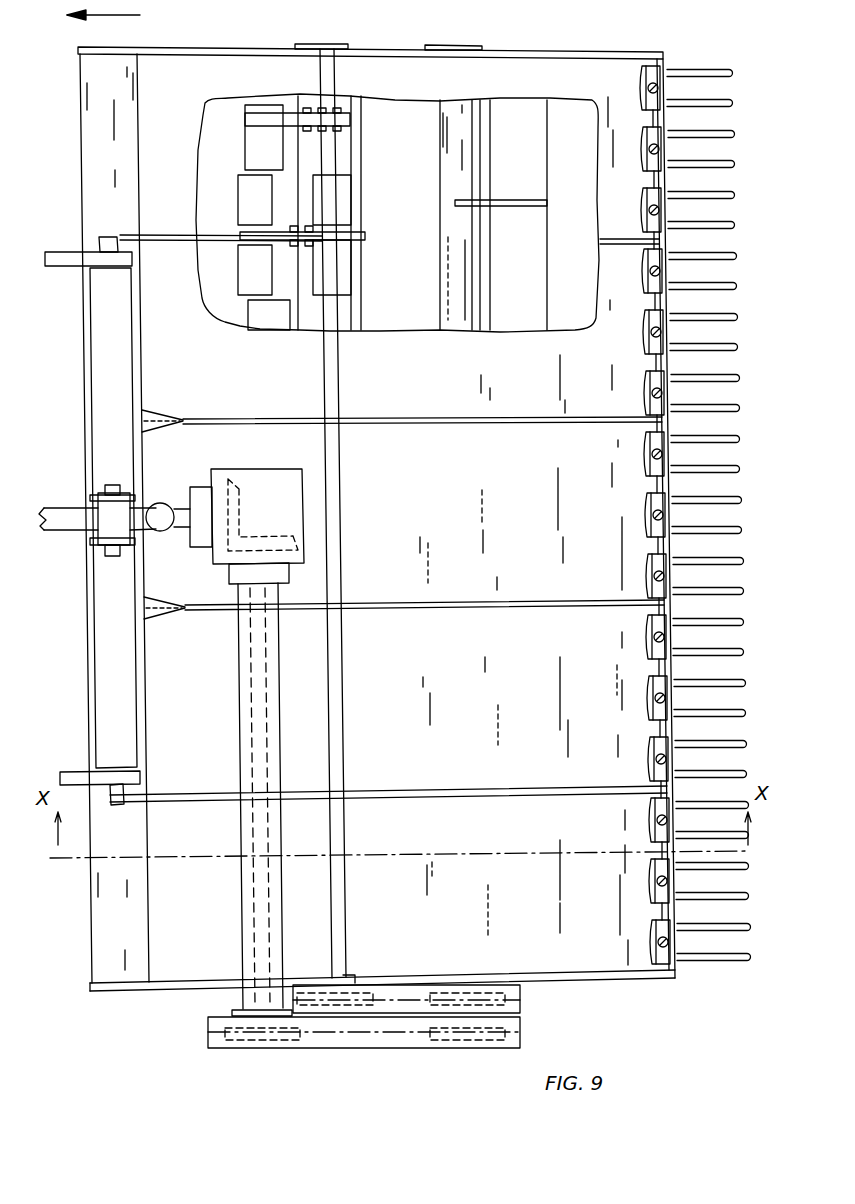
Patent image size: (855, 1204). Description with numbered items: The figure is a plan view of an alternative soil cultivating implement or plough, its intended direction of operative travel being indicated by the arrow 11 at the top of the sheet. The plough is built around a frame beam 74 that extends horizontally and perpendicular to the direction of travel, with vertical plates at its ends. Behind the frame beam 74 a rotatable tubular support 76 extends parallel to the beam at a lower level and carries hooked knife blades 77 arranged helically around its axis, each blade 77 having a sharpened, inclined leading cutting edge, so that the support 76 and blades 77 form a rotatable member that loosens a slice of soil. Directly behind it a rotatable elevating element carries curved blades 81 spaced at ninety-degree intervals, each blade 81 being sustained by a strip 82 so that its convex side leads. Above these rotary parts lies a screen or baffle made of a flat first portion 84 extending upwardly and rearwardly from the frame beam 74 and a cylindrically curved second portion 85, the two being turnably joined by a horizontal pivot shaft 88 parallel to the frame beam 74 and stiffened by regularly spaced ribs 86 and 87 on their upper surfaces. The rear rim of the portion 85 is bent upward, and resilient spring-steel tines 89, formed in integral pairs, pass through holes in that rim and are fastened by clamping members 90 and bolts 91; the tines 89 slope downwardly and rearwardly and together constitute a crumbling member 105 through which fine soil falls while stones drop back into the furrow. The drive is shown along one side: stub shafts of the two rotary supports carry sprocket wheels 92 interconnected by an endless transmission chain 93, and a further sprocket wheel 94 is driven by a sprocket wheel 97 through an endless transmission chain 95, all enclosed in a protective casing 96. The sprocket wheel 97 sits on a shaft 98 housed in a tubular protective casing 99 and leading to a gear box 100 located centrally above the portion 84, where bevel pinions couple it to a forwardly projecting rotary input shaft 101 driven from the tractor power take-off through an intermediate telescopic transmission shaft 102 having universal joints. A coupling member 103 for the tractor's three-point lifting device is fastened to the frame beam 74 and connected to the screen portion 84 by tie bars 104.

The direction arrow 11 is at (103, 10).
The frame beam 74 is at (127, 918).
The rotatable tubular support 76 is at (320, 320).
The hooked knife blades 77 is at (255, 150).
The curved blades 81 is at (531, 293).
The strip 82 is at (462, 210).
The first portion of screen or baffle 84 is at (199, 62).
The second portion of screen or baffle 85 is at (603, 962).
The ribs 86 is at (203, 777).
The ribs 87 is at (452, 607).
The horizontal pivot shaft 88 is at (338, 749).
The tines 89 is at (696, 531).
The clamping members 90 is at (645, 447).
The bolts 91 is at (650, 513).
The sprocket wheels 92 is at (371, 985).
The endless transmission chain 93 is at (410, 988).
The further sprocket wheel 94 is at (521, 1026).
The endless transmission chain 95 is at (393, 1032).
The protective casing 96 is at (358, 1047).
The sprocket wheel 97 is at (240, 1038).
The shaft 98 is at (243, 656).
The tubular protective casing 99 is at (247, 908).
The gear box 100 is at (279, 485).
The rotary input shaft 101 is at (183, 503).
The intermediate telescopic transmission shaft 102 is at (54, 512).
The coupling member 103 is at (103, 326).
The tie bars 104 is at (158, 420).
The crumbling member 105 is at (701, 645).